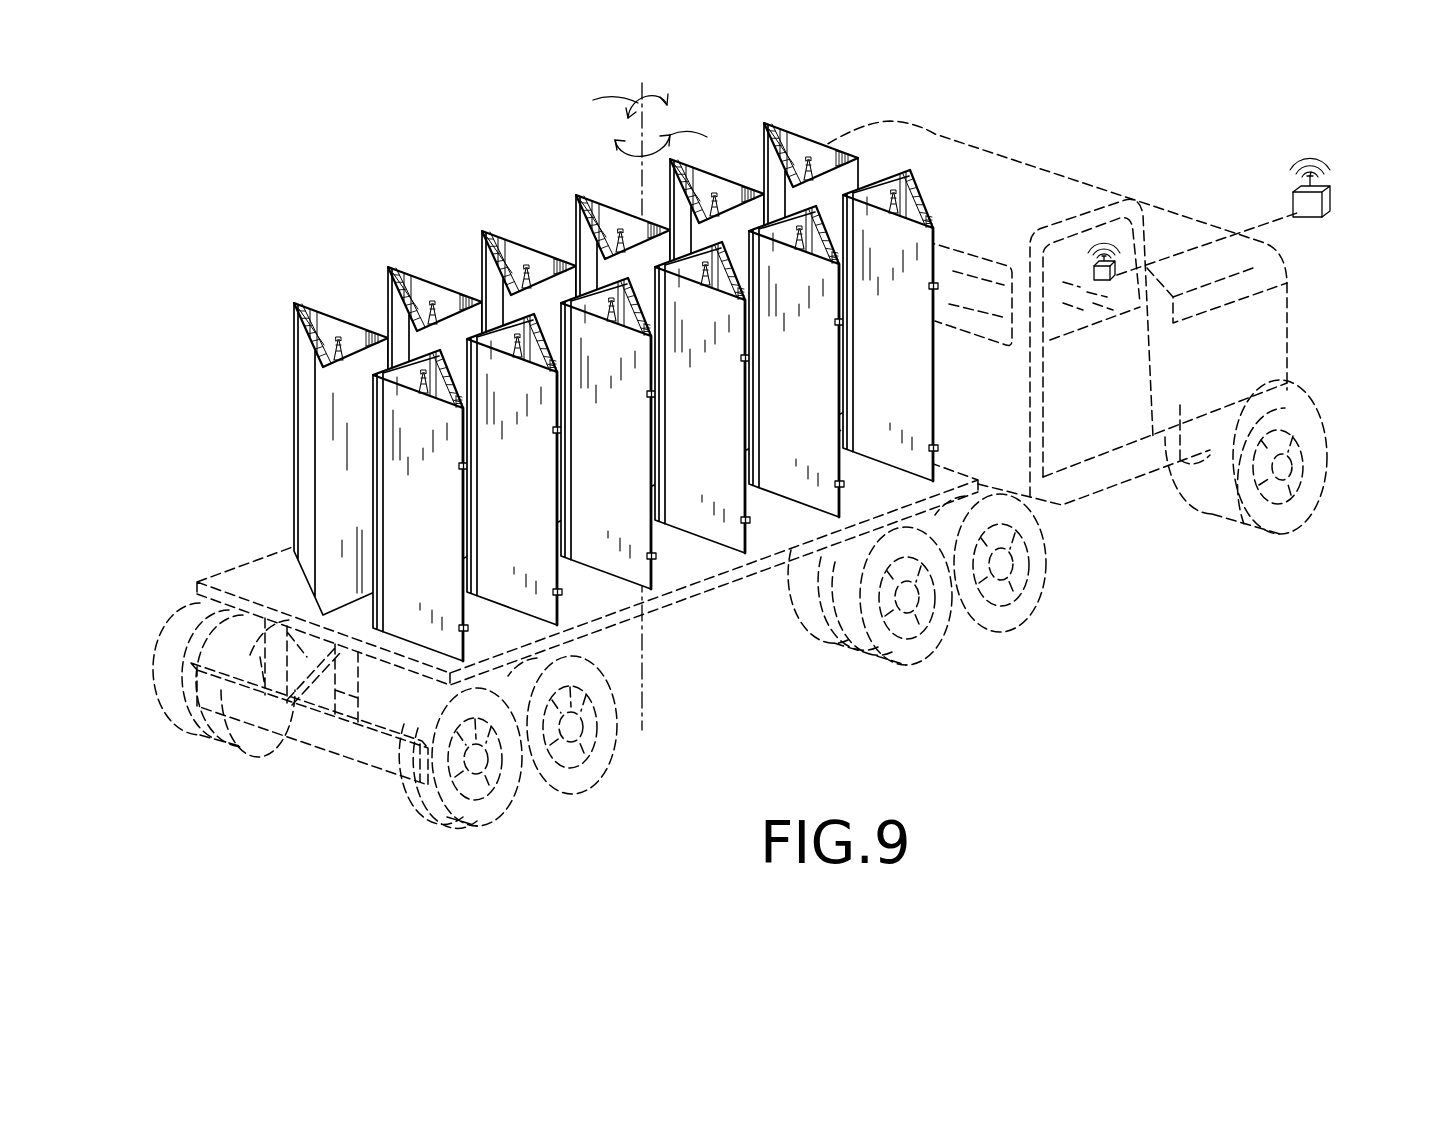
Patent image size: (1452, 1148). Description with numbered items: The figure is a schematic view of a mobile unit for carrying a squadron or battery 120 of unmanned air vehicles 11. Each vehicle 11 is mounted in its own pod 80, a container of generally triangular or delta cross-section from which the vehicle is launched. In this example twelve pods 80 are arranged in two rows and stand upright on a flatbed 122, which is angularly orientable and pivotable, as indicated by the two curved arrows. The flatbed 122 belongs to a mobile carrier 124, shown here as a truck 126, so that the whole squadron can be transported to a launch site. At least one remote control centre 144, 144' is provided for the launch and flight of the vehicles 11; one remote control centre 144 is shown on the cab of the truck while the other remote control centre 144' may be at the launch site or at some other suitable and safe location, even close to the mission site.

The squadron or battery 120 is at (236, 166).
The pod 80 is at (282, 327).
The vehicle 11 is at (345, 315).
The flatbed 122 is at (710, 589).
The mobile carrier 124 is at (1292, 322).
The truck 126 is at (1178, 466).
The remote control centre 144 is at (1072, 231).
The remote control centre 144' is at (1357, 196).